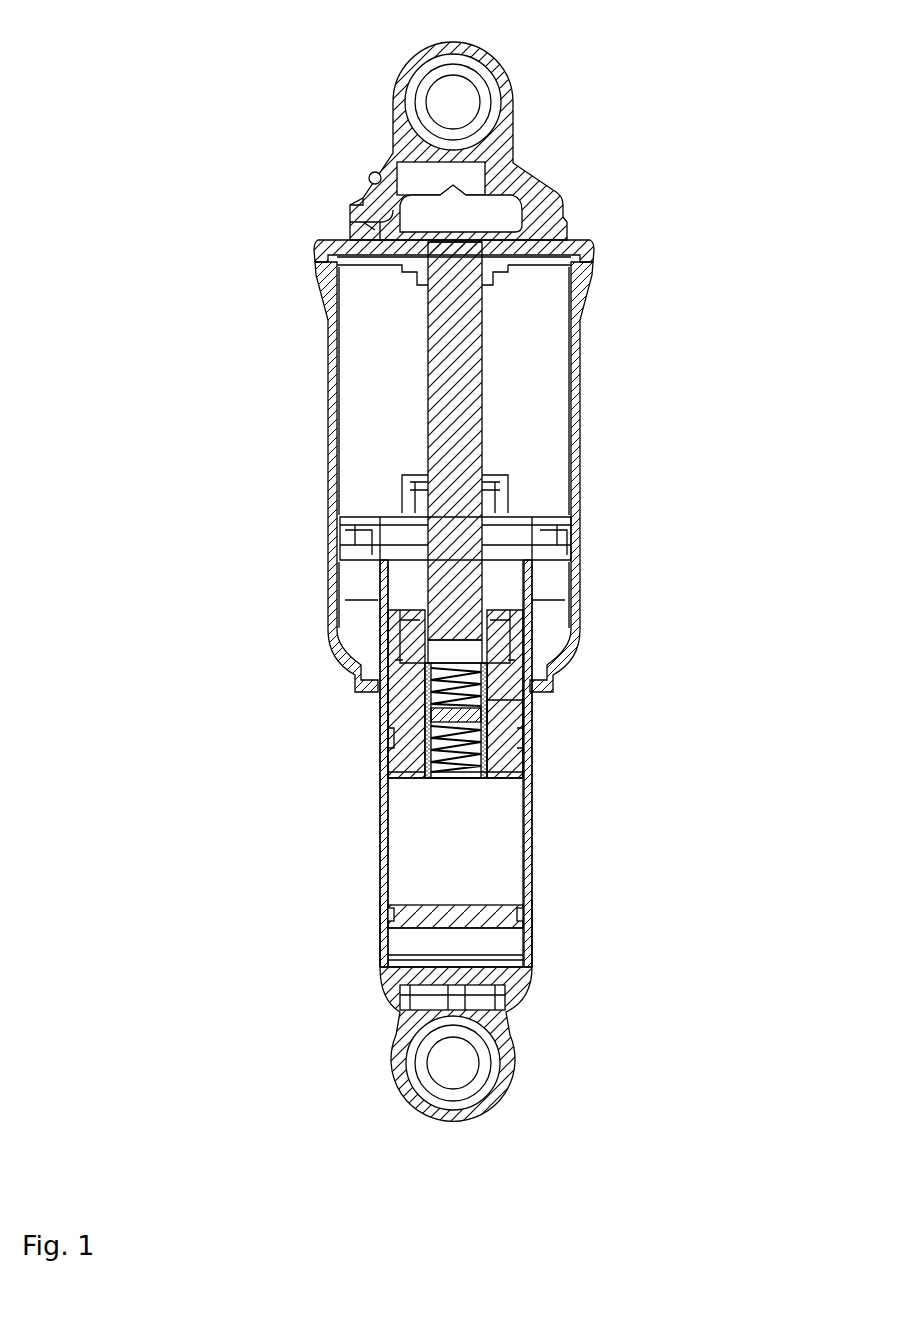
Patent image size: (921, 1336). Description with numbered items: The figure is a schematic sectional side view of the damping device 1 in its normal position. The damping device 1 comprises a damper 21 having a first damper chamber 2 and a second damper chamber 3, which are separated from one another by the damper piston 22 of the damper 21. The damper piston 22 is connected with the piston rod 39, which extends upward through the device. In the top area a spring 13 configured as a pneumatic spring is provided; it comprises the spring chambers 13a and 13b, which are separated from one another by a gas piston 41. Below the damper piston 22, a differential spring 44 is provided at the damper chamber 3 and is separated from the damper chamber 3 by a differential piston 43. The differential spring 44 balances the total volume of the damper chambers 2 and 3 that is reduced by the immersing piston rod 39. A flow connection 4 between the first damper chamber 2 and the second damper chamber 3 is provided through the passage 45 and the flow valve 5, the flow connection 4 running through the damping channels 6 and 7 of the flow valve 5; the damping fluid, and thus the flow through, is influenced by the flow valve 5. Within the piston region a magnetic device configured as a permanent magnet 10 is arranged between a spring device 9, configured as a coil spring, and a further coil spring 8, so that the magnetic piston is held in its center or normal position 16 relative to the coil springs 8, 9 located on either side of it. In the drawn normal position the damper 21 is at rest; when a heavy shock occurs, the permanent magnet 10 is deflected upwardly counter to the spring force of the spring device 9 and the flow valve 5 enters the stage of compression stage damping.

The damping device 1 is at (147, 71).
The spring 13 is at (540, 367).
The spring chamber 13a is at (537, 352).
The spring chamber 13b is at (553, 597).
The piston rod 39 is at (442, 402).
The gas piston 41 is at (350, 535).
The first damper chamber 2 is at (403, 588).
The passage 45 is at (420, 643).
The spring device 9 is at (537, 702).
The permanent magnet 10 is at (492, 723).
The coil spring 8 is at (488, 742).
The damper piston 22 is at (517, 760).
The normal position 16 is at (368, 740).
The damping channel 7 is at (425, 783).
The flow connection 4 is at (457, 783).
The damping channel 6 is at (491, 783).
The flow valve 5 is at (495, 797).
The second damper chamber 3 is at (420, 873).
The differential piston 43 is at (400, 923).
The differential spring 44 is at (400, 945).
The damper 21 is at (567, 932).